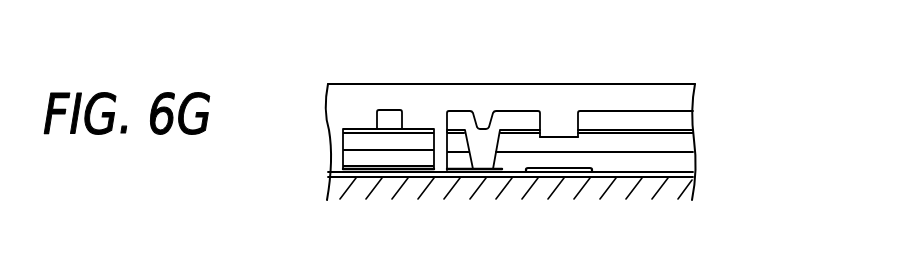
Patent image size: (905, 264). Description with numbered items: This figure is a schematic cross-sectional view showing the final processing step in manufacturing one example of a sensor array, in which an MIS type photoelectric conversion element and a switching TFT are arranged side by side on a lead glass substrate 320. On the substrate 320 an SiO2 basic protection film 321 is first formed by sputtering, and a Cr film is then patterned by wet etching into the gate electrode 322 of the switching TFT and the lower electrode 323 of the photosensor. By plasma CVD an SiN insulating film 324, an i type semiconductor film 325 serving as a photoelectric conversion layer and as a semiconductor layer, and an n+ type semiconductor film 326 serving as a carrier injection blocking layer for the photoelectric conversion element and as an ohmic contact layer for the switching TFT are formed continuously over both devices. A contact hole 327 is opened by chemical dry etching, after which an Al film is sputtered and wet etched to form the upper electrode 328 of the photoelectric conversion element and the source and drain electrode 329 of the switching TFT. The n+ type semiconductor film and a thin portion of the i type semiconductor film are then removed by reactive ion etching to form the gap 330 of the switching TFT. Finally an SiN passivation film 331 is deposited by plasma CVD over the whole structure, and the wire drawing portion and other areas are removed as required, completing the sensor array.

The substrate 320 is at (563, 190).
The protection film 321 is at (680, 175).
The gate electrode 322 is at (583, 172).
The lower electrode 323 is at (445, 170).
The insulating film 324 is at (682, 166).
The i type semiconductor film 325 is at (661, 136).
The n+ type semiconductor film 326 is at (626, 130).
The contact hole 327 is at (483, 153).
The upper electrode 328 is at (390, 110).
The source and drain electrode 329 is at (612, 117).
The gap 330 is at (558, 133).
The passivation film 331 is at (477, 94).